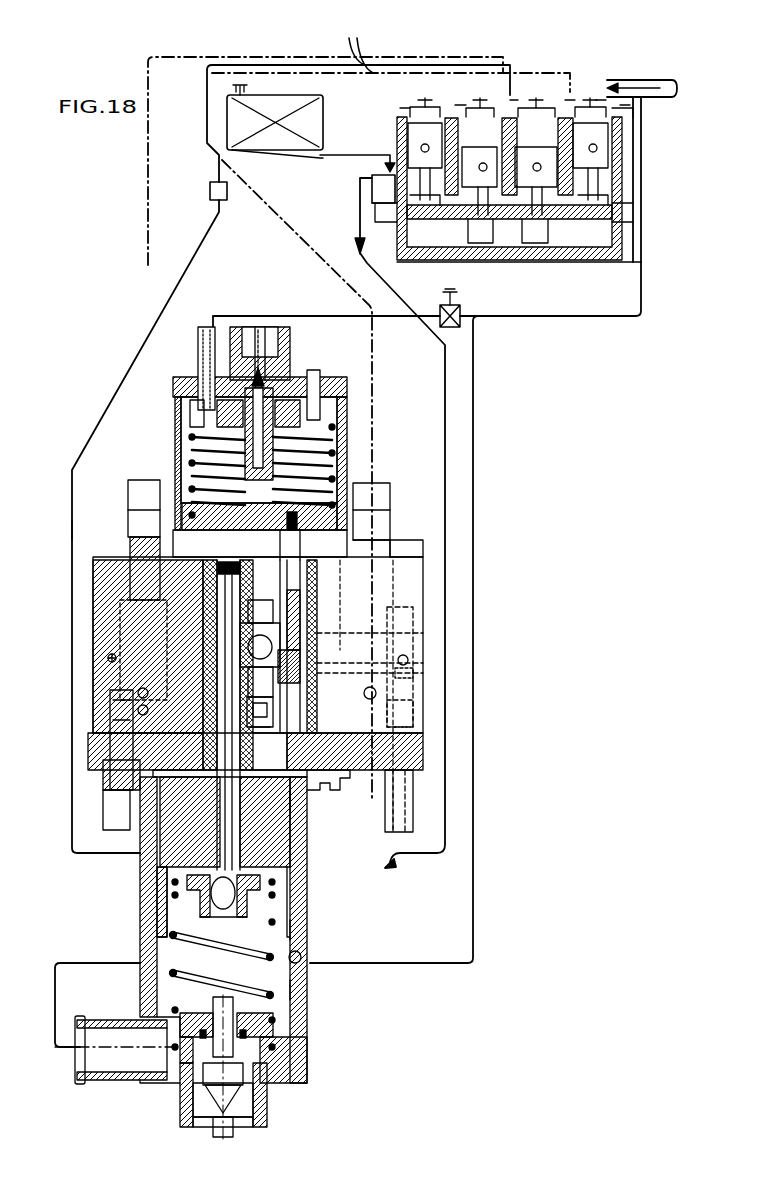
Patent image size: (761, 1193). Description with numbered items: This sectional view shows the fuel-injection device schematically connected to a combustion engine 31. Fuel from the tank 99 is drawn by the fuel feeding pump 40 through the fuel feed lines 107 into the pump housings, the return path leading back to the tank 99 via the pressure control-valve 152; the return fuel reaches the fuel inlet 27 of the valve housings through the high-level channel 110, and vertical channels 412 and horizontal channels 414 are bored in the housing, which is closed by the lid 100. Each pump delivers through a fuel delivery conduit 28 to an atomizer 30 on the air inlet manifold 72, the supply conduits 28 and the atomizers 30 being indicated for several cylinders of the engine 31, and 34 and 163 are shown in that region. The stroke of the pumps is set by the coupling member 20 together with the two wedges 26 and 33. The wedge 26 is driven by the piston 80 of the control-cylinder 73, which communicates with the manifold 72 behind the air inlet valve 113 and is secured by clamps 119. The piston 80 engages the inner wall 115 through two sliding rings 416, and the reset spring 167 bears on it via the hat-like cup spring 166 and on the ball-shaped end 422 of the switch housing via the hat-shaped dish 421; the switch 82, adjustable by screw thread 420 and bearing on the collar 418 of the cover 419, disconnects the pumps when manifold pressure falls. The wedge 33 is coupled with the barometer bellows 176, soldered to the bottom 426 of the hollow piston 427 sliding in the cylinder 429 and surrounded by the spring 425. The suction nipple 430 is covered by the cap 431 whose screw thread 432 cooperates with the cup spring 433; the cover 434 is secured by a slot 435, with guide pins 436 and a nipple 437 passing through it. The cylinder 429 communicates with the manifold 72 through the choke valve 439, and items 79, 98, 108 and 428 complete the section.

The coupling member 20 is at (270, 663).
The wedge 26 is at (242, 568).
The fuel inlet 27 is at (380, 705).
The fuel delivery conduit 28 is at (352, 53).
The atomizer 30 is at (460, 105).
The combustion engine 31 is at (552, 270).
The wedge 33 is at (266, 592).
The pump piston unit 34 is at (625, 105).
The fuel feeding pump 40 is at (372, 188).
The air inlet manifold 72 is at (600, 100).
The control-cylinder 73 is at (300, 992).
The pin 79 is at (260, 647).
The piston 80 is at (265, 835).
The switch 82 is at (207, 1093).
The nut 98 is at (132, 570).
The tank 99 is at (297, 142).
The lid 100 is at (405, 556).
The fuel feed line 107 is at (385, 525).
The line 108 is at (75, 530).
The high-level channel 110 is at (365, 693).
The air inlet valve 113 is at (676, 80).
The inner wall 115 is at (303, 955).
The clamp 119 is at (338, 775).
The pressure control-valve 152 is at (210, 188).
The connection 163 is at (618, 115).
The hat-like cup spring 166 is at (262, 900).
The reset spring 167 is at (197, 978).
The barometer bellows 176 is at (340, 458).
The vertical channel 412 is at (402, 672).
The horizontal channel 414 is at (108, 658).
The sliding ring 416 is at (307, 805).
The collar 418 is at (238, 1128).
The cover 419 is at (265, 1108).
The screw thread 420 is at (280, 1080).
The hat-shaped dish 421 is at (250, 1010).
The ball-shaped end 422 is at (197, 1010).
The spring 425 is at (343, 411).
The bottom 426 is at (250, 515).
The hollow piston 427 is at (340, 479).
The spring seat 428 is at (340, 438).
The cylinder 429 is at (342, 386).
The suction nipple 430 is at (268, 382).
The cap 431 is at (268, 360).
The screw thread 432 is at (300, 395).
The cup spring 433 is at (225, 398).
The cover 434 is at (205, 386).
The slot 435 is at (255, 375).
The guide pin 436 is at (315, 392).
The nipple 437 is at (200, 360).
The choke valve 439 is at (455, 307).